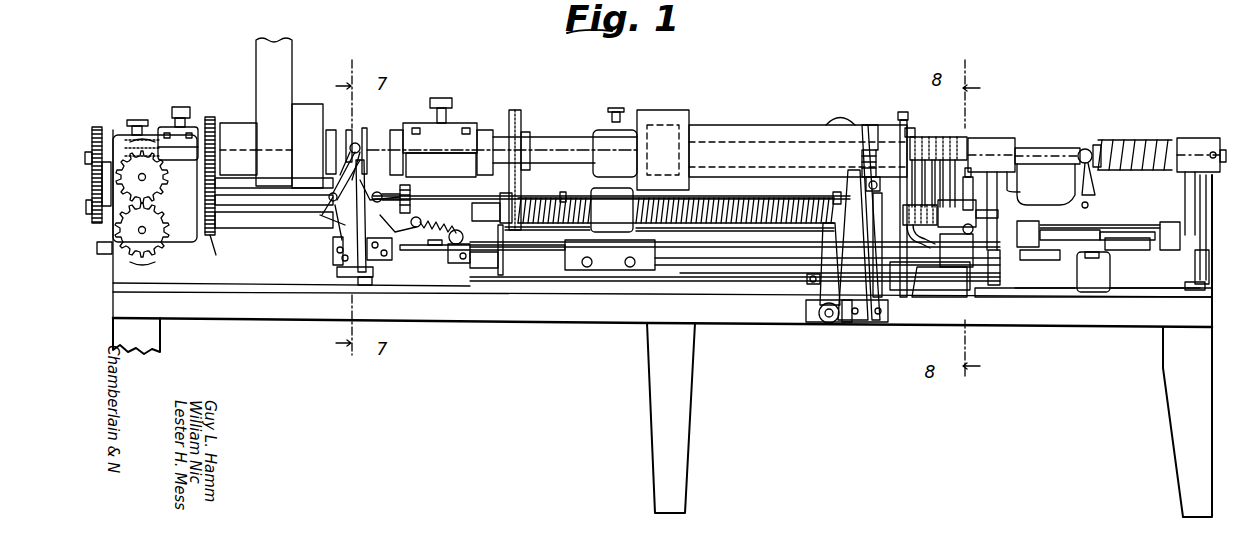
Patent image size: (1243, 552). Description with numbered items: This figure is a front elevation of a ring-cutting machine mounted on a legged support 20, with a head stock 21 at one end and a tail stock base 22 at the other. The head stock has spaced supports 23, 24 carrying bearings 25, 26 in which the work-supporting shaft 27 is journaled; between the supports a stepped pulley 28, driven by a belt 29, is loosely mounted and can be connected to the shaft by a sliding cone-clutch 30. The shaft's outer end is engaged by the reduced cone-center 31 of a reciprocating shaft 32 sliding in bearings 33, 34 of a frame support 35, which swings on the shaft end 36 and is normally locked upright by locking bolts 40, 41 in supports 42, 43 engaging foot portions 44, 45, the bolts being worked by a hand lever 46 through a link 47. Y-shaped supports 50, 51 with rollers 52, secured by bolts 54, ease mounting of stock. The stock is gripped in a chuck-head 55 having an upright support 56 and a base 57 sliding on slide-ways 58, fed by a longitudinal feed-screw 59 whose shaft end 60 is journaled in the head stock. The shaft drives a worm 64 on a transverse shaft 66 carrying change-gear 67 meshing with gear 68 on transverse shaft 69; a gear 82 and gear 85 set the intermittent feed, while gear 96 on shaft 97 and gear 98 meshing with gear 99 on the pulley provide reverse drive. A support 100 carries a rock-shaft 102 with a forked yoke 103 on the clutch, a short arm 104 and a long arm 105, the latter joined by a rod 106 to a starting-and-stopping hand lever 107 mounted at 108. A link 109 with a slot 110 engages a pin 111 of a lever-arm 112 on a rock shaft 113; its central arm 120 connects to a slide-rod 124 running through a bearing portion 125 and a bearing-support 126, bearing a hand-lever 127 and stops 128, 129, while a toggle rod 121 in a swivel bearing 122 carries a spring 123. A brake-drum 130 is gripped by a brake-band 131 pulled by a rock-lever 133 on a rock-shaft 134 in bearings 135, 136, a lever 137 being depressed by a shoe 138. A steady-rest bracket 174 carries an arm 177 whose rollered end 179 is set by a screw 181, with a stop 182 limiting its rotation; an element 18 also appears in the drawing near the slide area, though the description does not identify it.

The work support 18 is at (1100, 225).
The legged support 20 is at (500, 322).
The head stock 21 is at (262, 292).
The tail stock base 22 is at (1093, 279).
The support 23 is at (155, 188).
The support 24 is at (436, 187).
The bearing 25 is at (172, 127).
The bearing 26 is at (430, 124).
The work-supporting shaft 27 is at (555, 153).
The stepped pulley 28 is at (306, 112).
The belt 29 is at (282, 55).
The sliding cone-clutch 30 is at (332, 130).
The reduced cone-center 31 is at (915, 137).
The reciprocating shaft 32 is at (1045, 150).
The bearing 33 is at (995, 140).
The bearing 34 is at (1190, 140).
The frame support 35 is at (1127, 220).
The shaft end 36 is at (975, 235).
The locking bolt 40 is at (1020, 228).
The locking bolt 41 is at (1170, 240).
The support 42 is at (1047, 305).
The support 43 is at (1160, 240).
The foot portion 44 is at (1000, 260).
The foot portion 45 is at (1194, 267).
The hand lever 46 is at (1060, 292).
The link 47 is at (1058, 232).
The Y-shaped support 50 is at (939, 282).
The Y-shaped support 51 is at (1200, 292).
The roller 52 is at (1200, 191).
The bolt 54 is at (975, 200).
The chuck-head 55 is at (655, 112).
The upright support 56 is at (612, 176).
The base 57 is at (580, 270).
The slide-ways 58 is at (670, 260).
The longitudinal feed-screw 59 is at (750, 208).
The shaft end 60 is at (486, 212).
The worm 64 is at (133, 120).
The shaft 66 is at (146, 176).
The gear 67 is at (160, 183).
The gear 68 is at (150, 246).
The transverse shaft 69 is at (146, 231).
The gear 82 is at (95, 130).
The gear 85 is at (88, 200).
The gear 96 is at (385, 194).
The shaft 97 is at (260, 180).
The gear 98 is at (214, 240).
The gear 99 is at (210, 117).
The support 100 is at (338, 205).
The rock-shaft 102 is at (340, 190).
The forked yoke 103 is at (362, 135).
The short arm 104 is at (360, 143).
The long arm 105 is at (340, 268).
The rod 106 is at (745, 282).
The starting-and-stopping hand lever 107 is at (815, 315).
The mounting 108 is at (830, 322).
The link 109 is at (358, 212).
The slot 110 is at (340, 245).
The pin 111 is at (335, 225).
The lever-arm 112 is at (394, 254).
The rock shaft 113 is at (372, 284).
The central arm 120 is at (611, 180).
The toggle rod 121 is at (439, 246).
The swivel bearing 122 is at (452, 252).
The spring 123 is at (432, 225).
The slide-rod 124 is at (530, 205).
The bearing portion 125 is at (612, 210).
The bearing-support 126 is at (925, 292).
The hand-lever 127 is at (878, 150).
The stop 128 is at (566, 188).
The stop 129 is at (834, 195).
The brake-drum 130 is at (527, 132).
The brake-band 131 is at (510, 158).
The rock-lever 133 is at (512, 250).
The rock-shaft 134 is at (610, 255).
The bearing 135 is at (477, 199).
The bearing 136 is at (890, 270).
The lever 137 is at (808, 283).
The shoe 138 is at (676, 200).
The bracket 174 is at (876, 310).
The arm 177 is at (845, 125).
The rollered end 179 is at (866, 125).
The screw 181 is at (866, 182).
The stop 182 is at (860, 322).